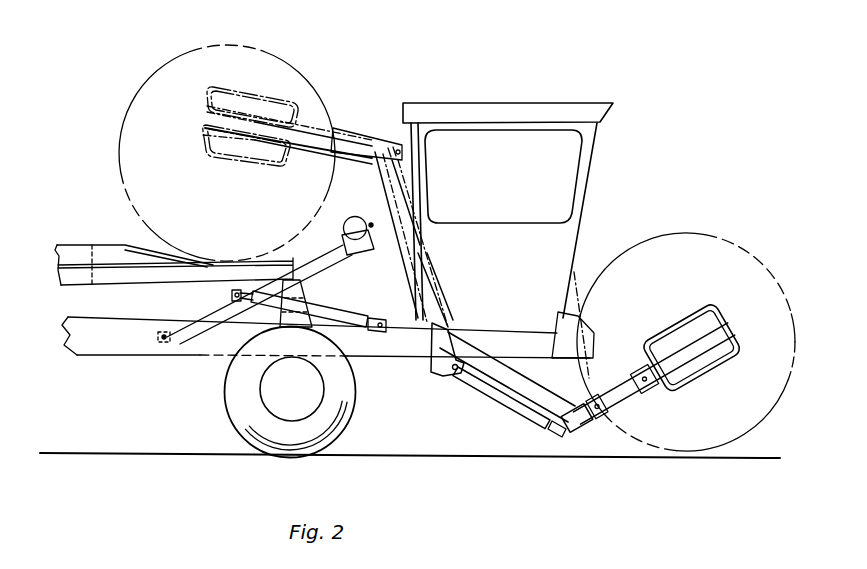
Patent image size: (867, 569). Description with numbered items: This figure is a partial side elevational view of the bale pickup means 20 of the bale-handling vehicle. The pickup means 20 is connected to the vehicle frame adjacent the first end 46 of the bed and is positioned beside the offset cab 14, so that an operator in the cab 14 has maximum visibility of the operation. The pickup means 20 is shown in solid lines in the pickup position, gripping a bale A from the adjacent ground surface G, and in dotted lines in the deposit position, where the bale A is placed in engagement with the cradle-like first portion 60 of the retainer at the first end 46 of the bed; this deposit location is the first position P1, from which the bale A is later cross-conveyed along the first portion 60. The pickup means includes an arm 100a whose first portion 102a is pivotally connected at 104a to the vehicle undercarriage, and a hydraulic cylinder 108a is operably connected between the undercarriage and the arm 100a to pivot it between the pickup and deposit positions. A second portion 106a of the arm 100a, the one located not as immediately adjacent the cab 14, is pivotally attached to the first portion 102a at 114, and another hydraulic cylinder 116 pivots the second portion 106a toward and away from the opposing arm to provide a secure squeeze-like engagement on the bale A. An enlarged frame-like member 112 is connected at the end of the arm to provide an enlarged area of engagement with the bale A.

The first position P1 is at (154, 76).
The bale A is at (227, 46).
The pickup means 20 is at (357, 90).
The cab 14 is at (503, 103).
The first portion of retainer 60 is at (212, 260).
The first end of bed 46 is at (294, 277).
The pivotal connection of first portion 104a is at (424, 327).
The hydraulic cylinder 108a is at (497, 397).
The first portion of arm 102a is at (517, 378).
The arm 100a is at (583, 438).
The second portion of arm 106a is at (648, 396).
The pivotal attachment 114 is at (609, 415).
The hydraulic cylinder 116 is at (617, 385).
The frame-like member 112 is at (706, 379).
The ground surface G is at (352, 453).